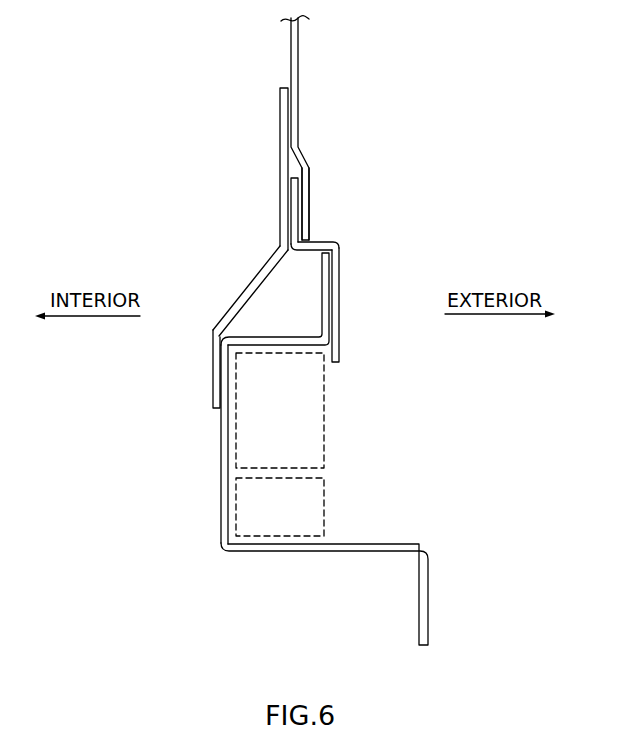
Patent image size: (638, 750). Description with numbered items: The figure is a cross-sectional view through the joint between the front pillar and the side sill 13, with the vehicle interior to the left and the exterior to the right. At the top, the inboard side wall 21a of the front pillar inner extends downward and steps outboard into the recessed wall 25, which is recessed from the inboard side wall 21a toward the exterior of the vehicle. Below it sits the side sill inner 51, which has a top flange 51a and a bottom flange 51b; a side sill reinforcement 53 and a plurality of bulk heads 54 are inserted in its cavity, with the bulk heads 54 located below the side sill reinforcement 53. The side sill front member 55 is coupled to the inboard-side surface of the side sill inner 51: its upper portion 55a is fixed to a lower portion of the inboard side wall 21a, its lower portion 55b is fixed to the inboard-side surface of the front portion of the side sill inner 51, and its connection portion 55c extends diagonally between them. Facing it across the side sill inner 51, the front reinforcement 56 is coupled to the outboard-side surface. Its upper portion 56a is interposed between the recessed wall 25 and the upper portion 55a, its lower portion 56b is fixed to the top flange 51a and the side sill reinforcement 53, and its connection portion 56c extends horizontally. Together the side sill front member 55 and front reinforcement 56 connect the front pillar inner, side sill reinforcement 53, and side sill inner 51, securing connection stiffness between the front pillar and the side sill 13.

The side sill 13 is at (265, 449).
The inboard side wall 21a is at (291, 47).
The recessed wall 25 is at (309, 200).
The side sill inner 51 is at (279, 449).
The top flange 51a is at (322, 307).
The bottom flange 51b is at (418, 607).
The side sill reinforcement 53 is at (324, 416).
The bulk heads 54 is at (324, 508).
The side sill front member 55 is at (204, 250).
The upper portion 55a is at (280, 117).
The lower portion 55b is at (212, 378).
The connection portion 55c is at (238, 300).
The front reinforcement 56 is at (314, 270).
The upper portion 56a is at (291, 190).
The lower portion 56b is at (339, 306).
The connection portion 56c is at (320, 242).